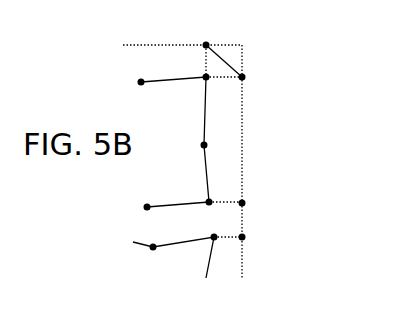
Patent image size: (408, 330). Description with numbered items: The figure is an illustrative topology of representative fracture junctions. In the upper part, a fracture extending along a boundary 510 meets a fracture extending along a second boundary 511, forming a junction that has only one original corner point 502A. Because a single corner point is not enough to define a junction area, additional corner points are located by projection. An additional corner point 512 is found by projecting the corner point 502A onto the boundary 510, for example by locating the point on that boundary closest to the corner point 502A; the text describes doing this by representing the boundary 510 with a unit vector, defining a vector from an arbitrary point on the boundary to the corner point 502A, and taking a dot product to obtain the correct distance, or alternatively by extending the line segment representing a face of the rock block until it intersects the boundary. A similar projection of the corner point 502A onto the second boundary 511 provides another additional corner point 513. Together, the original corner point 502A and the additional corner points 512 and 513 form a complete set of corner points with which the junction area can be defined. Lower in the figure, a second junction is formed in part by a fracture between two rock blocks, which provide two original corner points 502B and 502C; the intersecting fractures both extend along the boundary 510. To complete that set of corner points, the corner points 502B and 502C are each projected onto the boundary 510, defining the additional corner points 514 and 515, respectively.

The boundary 510 is at (243, 142).
The second boundary 511 is at (173, 44).
The additional corner point 512 is at (245, 77).
The additional corner point 513 is at (207, 44).
The additional corner point 514 is at (243, 205).
The additional corner point 515 is at (243, 239).
The corner point 502A is at (203, 82).
The corner point 502B is at (205, 199).
The corner point 502C is at (210, 240).